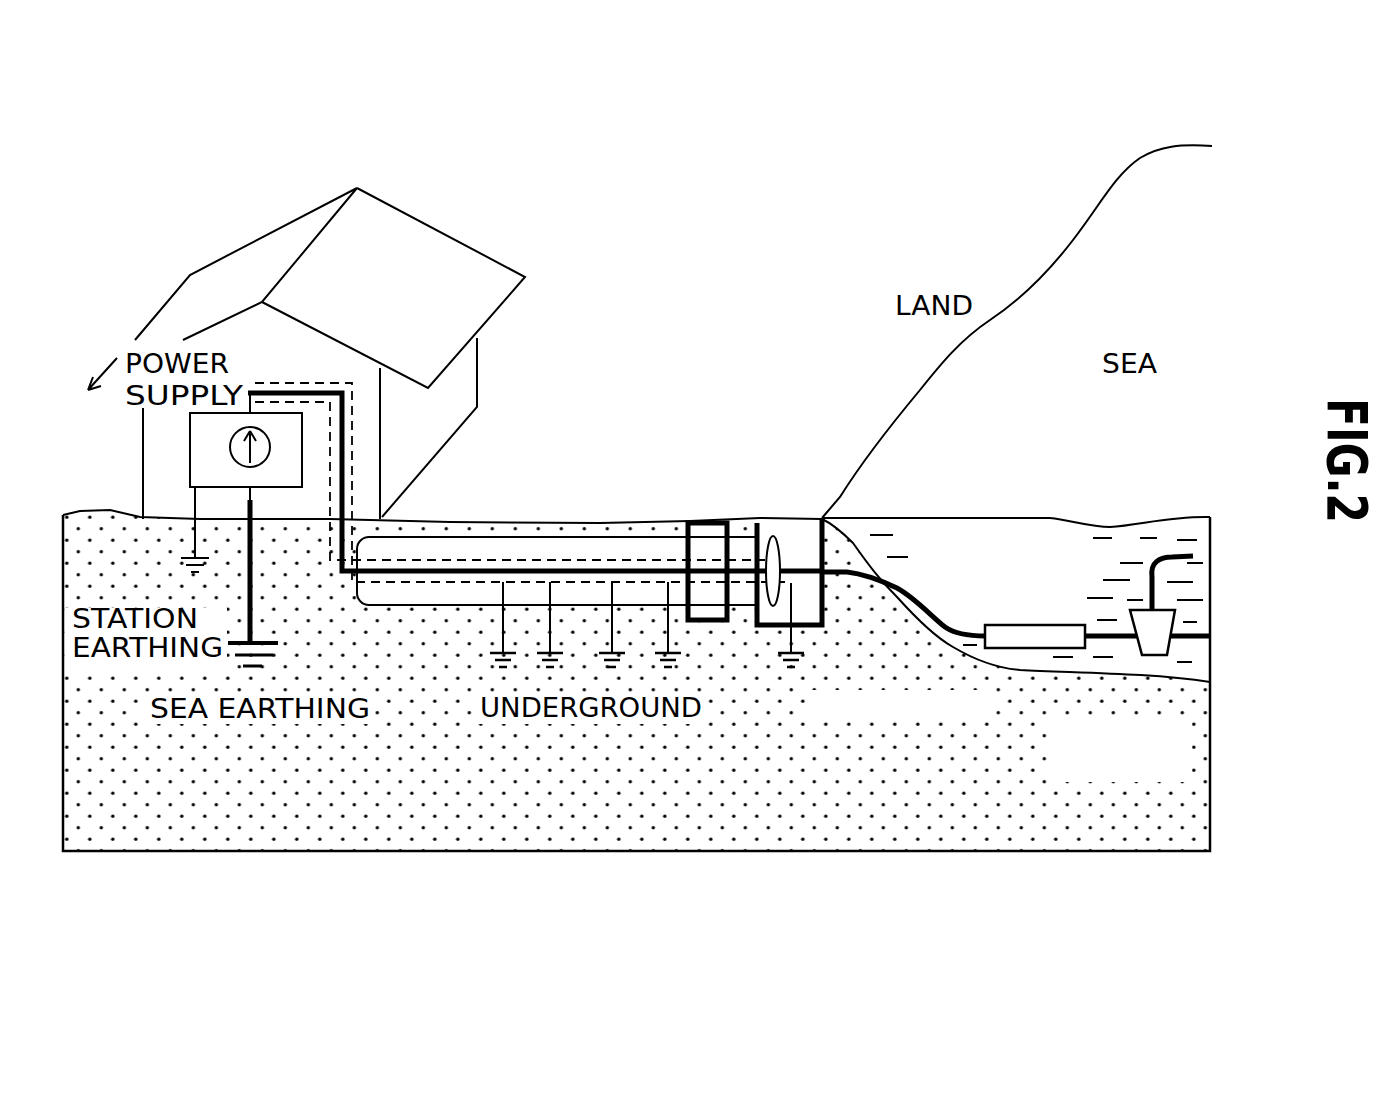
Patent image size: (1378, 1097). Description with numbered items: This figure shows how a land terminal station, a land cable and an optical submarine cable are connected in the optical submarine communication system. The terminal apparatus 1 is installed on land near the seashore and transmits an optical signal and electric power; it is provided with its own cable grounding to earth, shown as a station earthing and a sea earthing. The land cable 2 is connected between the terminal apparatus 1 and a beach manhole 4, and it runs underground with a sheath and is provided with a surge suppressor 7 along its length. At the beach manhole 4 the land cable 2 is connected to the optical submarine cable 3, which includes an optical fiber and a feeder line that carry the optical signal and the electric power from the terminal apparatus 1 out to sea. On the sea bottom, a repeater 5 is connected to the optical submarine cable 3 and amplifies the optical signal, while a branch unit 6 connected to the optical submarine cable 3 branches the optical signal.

The terminal apparatus 1 is at (327, 326).
The land cable 2 is at (455, 562).
The optical submarine cable 3 is at (977, 597).
The beach manhole 4 is at (815, 550).
The repeater 5 is at (1027, 650).
The branch unit 6 is at (1140, 643).
The surge suppressor 7 is at (685, 548).